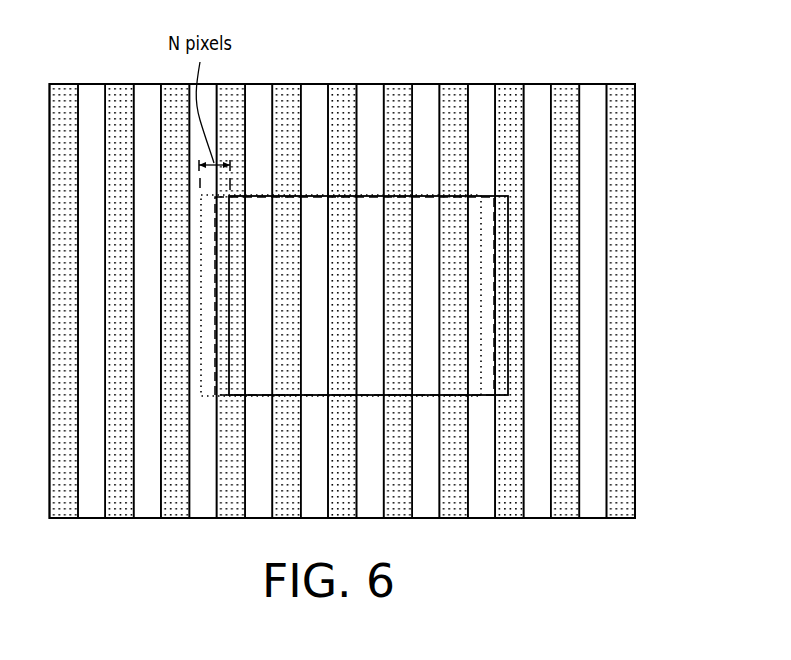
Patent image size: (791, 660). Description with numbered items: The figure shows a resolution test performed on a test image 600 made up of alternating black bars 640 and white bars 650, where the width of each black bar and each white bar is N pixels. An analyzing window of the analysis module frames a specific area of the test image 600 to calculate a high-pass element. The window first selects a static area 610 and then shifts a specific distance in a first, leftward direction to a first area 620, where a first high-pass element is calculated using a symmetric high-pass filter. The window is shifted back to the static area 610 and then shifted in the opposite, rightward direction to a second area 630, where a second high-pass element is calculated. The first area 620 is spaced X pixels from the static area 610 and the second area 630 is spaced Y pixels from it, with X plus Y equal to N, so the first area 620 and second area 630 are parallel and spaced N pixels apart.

The test image 600 is at (718, 557).
The static area 610 is at (494, 316).
The first area 620 is at (508, 233).
The second area 630 is at (482, 350).
The stippled stripes 640 is at (510, 84).
The blank stripes 650 is at (535, 84).